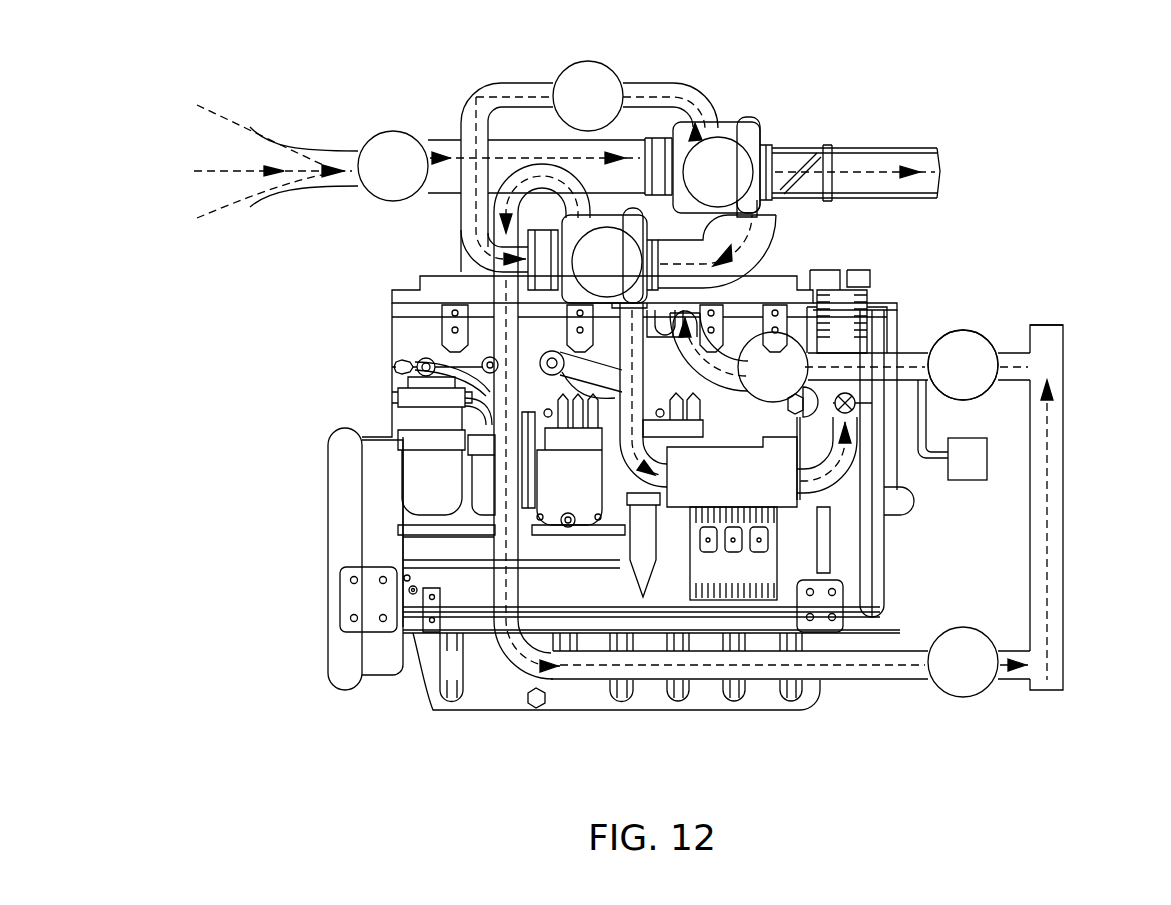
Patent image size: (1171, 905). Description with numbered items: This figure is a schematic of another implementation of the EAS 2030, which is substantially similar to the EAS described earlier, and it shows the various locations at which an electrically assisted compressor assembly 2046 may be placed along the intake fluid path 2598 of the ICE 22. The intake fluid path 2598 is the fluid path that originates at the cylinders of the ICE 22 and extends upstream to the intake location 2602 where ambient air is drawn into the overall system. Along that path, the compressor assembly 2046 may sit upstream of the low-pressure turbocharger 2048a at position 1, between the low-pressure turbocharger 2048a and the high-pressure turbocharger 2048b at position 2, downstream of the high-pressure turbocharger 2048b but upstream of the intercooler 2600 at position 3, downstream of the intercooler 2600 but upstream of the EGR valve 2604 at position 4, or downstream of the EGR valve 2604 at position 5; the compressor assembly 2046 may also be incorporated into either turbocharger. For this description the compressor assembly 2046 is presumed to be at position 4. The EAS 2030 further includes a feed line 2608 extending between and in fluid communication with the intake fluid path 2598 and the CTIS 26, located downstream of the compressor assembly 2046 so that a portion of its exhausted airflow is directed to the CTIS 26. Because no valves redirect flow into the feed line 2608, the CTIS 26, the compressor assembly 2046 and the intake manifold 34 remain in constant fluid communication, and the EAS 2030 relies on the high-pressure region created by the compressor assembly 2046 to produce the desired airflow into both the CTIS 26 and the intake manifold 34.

The intake location 2602 is at (284, 190).
The high-pressure turbocharger 2048b is at (596, 228).
The low-pressure turbocharger 2048a is at (722, 135).
The intake manifold 34 is at (702, 345).
The EAS 2030 is at (1058, 260).
The electrically assisted compressor assembly 2046 is at (985, 330).
The feed line 2608 is at (926, 432).
The intercooler 2600 is at (1065, 455).
The EGR valve 2604 is at (858, 413).
The CTIS 26 is at (967, 482).
The intake fluid path 2598 is at (892, 680).
The ICE 22 is at (483, 666).
The position 1 is at (393, 166).
The position 2 is at (588, 96).
The position 3 is at (963, 662).
The position 4 is at (963, 365).
The position 5 is at (773, 367).